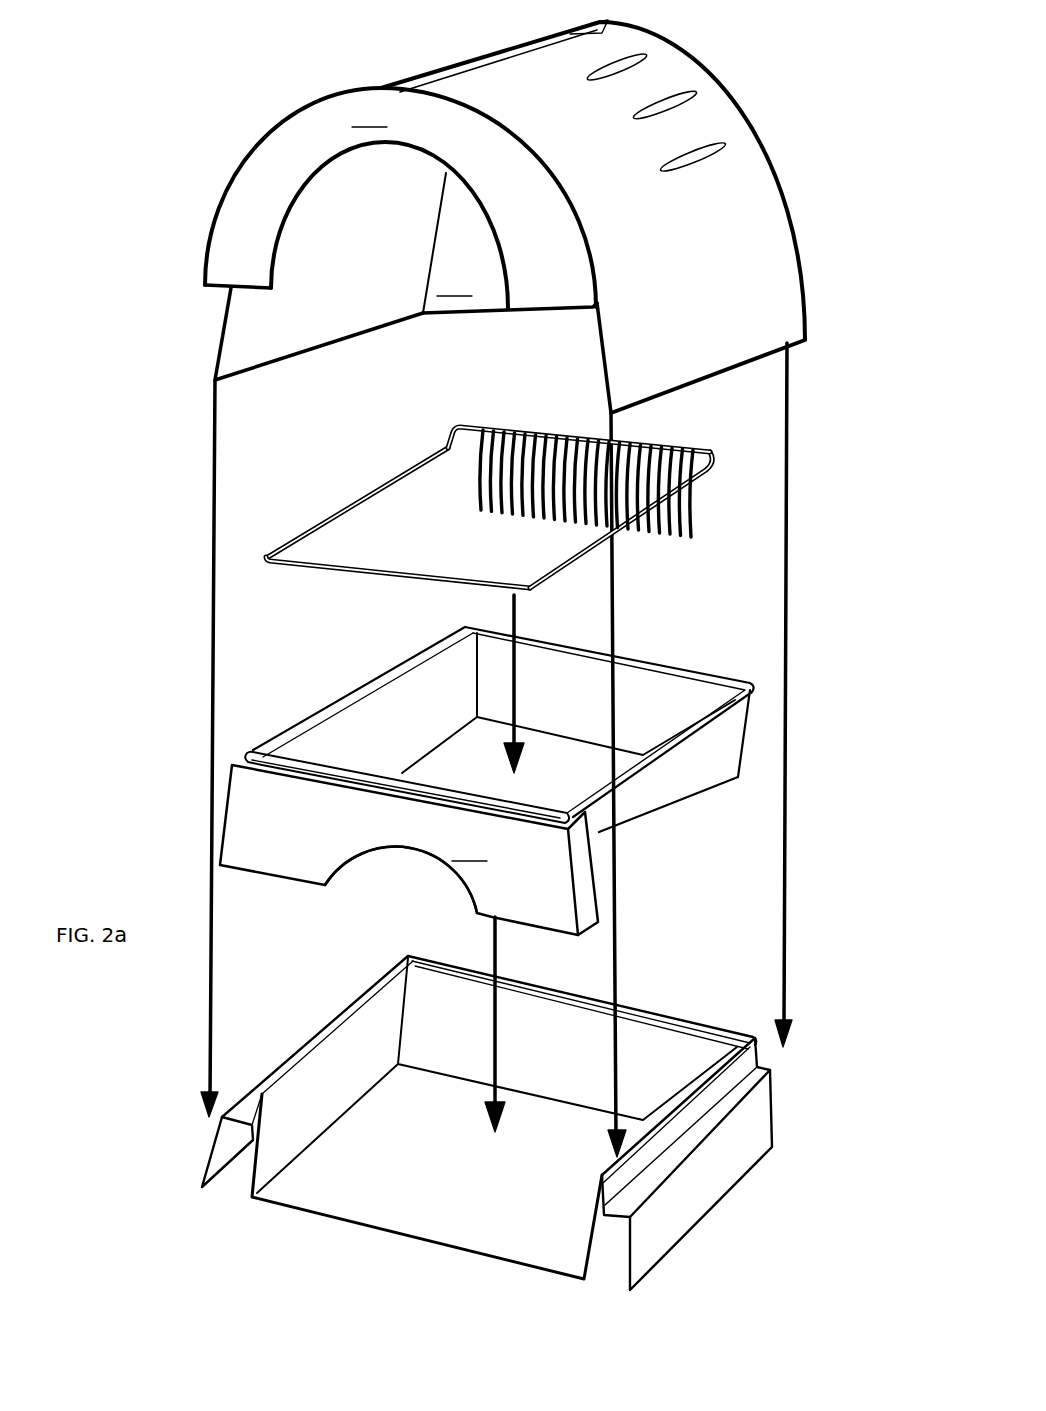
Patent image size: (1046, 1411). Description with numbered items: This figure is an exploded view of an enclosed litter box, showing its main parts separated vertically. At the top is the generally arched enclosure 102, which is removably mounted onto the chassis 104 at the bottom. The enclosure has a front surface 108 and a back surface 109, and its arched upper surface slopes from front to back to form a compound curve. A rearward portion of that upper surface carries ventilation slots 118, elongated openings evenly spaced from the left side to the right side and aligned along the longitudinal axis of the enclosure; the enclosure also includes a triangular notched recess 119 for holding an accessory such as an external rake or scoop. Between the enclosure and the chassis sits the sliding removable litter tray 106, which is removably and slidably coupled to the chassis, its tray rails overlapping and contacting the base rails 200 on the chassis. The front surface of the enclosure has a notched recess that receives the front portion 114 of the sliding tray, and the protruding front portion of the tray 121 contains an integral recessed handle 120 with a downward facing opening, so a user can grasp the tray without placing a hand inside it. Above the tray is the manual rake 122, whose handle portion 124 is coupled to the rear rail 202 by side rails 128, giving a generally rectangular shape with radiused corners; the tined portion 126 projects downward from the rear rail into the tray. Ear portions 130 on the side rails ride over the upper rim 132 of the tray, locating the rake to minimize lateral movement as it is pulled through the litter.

The arched enclosure 102 is at (551, 216).
The chassis 104 is at (487, 1104).
The sliding removable litter tray 106 is at (487, 769).
The front surface 108 is at (400, 197).
The back surface 109 is at (389, 225).
The front portion of the sliding tray 114 is at (587, 872).
The ventilation slots 118 is at (585, 78).
The triangular notched recess 119 is at (601, 32).
The recessed handle 120 is at (362, 857).
The protruding front portion of the tray 121 is at (481, 850).
The manual rake 122 is at (503, 485).
The handle portion of the rake 124 is at (277, 570).
The tined portion 126 is at (487, 503).
The side rails 128 is at (362, 490).
The ear portions 130 is at (720, 467).
The upper rim 132 is at (728, 680).
The base rails 200 is at (315, 1032).
The rear rail 202 is at (525, 427).